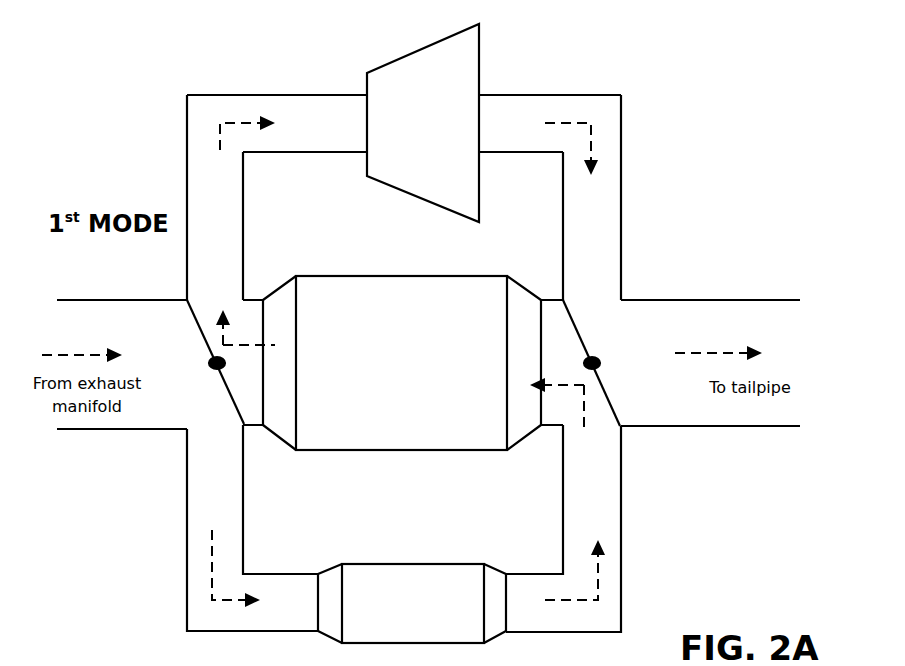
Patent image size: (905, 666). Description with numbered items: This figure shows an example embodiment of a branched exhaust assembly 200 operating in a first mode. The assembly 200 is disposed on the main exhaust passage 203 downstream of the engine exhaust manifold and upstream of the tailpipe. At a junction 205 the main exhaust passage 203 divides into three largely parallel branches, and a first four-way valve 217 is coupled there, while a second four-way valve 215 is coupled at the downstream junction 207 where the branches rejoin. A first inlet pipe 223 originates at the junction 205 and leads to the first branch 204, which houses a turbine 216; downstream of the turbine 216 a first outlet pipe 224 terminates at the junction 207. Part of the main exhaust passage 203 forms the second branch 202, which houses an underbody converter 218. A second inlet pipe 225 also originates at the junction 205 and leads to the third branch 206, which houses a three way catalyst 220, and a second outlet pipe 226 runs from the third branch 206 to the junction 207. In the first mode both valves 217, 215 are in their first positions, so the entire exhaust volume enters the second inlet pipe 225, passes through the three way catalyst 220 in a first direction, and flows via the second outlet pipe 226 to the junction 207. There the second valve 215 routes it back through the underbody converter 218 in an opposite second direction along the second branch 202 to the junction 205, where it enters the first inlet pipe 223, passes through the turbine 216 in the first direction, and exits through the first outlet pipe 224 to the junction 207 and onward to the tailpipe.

The branched exhaust assembly 200 is at (672, 110).
The second branch 202 is at (253, 300).
The main exhaust passage 203 is at (135, 430).
The first branch 204 is at (509, 95).
The junction 205 is at (209, 362).
The third branch 206 is at (273, 574).
The junction 207 is at (594, 363).
The second four-way valve 215 is at (608, 405).
The turbine 216 is at (423, 123).
The first four-way valve 217 is at (200, 330).
The underbody converter 218 is at (402, 363).
The three way catalyst 220 is at (412, 603).
The first inlet pipe 223 is at (187, 178).
The first outlet pipe 224 is at (621, 190).
The second inlet pipe 225 is at (188, 560).
The second outlet pipe 226 is at (621, 577).